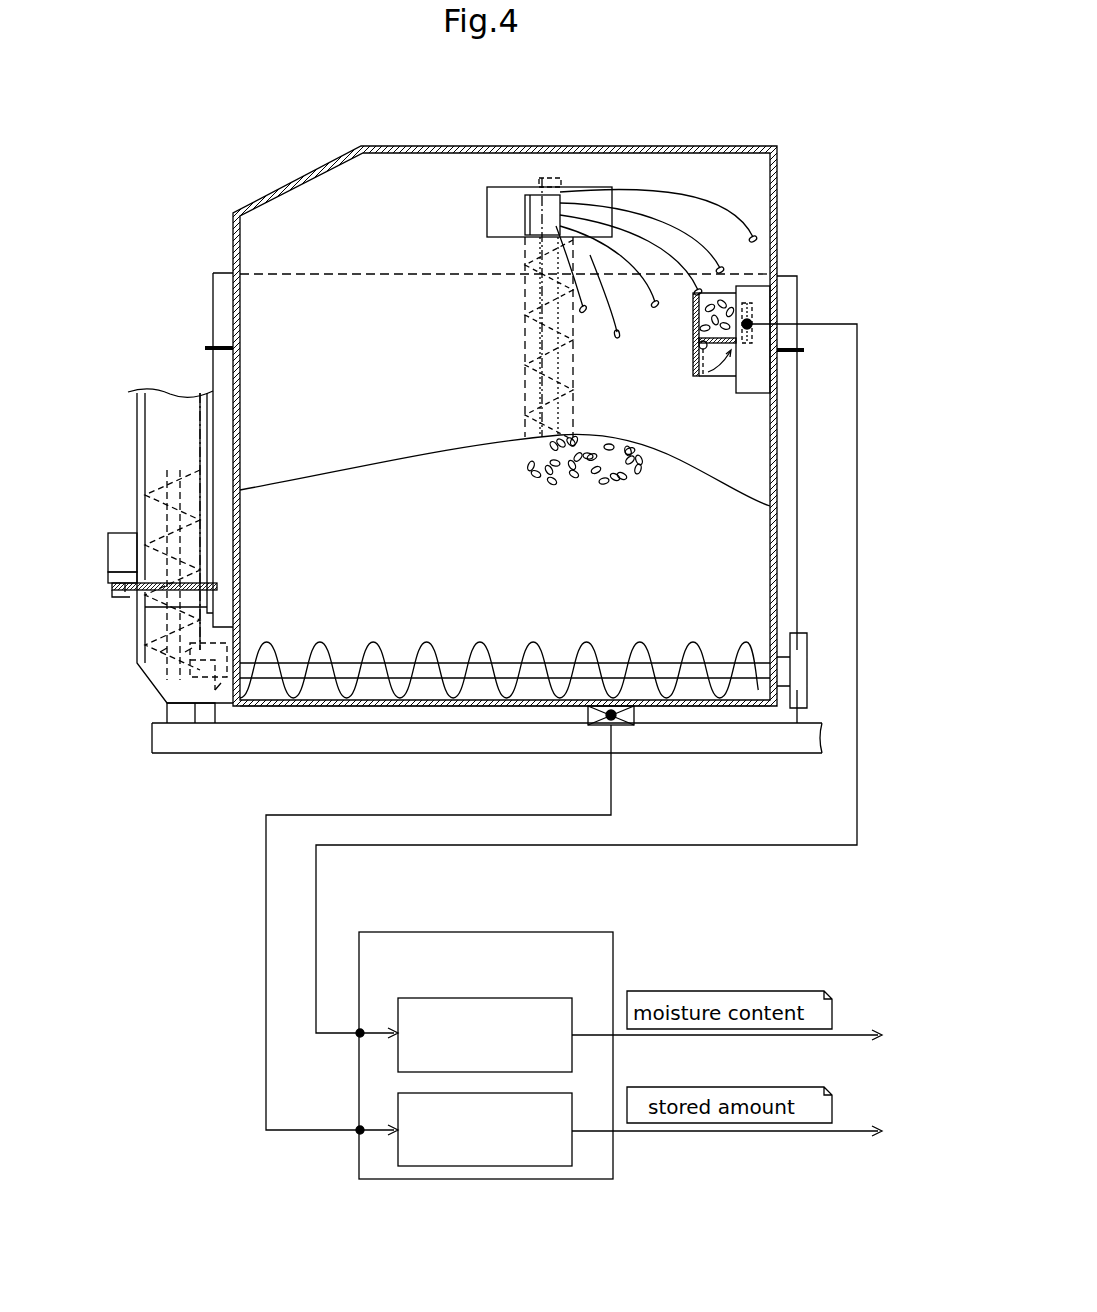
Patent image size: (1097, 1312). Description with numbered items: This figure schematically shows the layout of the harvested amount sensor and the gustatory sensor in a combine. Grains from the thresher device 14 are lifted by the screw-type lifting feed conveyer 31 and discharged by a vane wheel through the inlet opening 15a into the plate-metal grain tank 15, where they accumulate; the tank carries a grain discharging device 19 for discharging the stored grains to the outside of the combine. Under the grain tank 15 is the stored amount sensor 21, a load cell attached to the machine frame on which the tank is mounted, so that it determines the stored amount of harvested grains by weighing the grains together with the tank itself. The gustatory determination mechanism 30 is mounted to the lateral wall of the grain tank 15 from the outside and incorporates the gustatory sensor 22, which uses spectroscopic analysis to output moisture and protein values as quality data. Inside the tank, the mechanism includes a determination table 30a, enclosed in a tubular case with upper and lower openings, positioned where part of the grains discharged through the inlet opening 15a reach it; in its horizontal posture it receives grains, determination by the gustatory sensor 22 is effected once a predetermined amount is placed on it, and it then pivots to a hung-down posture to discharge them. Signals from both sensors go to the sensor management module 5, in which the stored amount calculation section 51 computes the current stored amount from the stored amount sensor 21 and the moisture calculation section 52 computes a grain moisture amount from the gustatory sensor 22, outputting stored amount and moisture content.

The grain tank 15 is at (363, 140).
The thresher device 14 is at (218, 272).
The inlet opening 15a is at (492, 206).
The gustatory sensor 22 is at (758, 300).
The lifting feed conveyer 31 is at (523, 330).
The gustatory determination mechanism 30 is at (753, 398).
The determination table 30a is at (704, 350).
The grain discharging device 19 is at (425, 645).
The stored amount sensor 21 is at (632, 716).
The sensor management module 5 is at (463, 1032).
The moisture calculation section 52 is at (398, 1055).
The stored amount calculation section 51 is at (398, 1146).